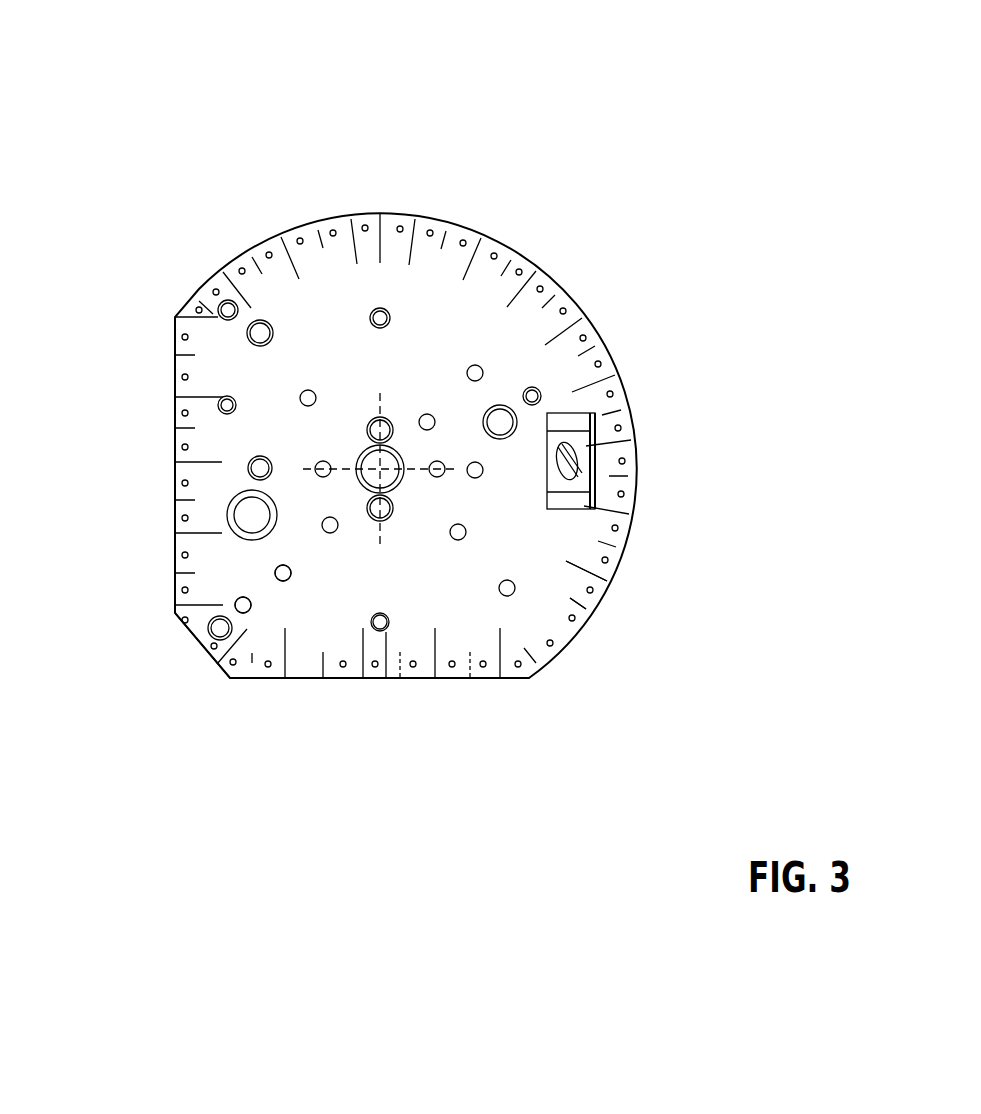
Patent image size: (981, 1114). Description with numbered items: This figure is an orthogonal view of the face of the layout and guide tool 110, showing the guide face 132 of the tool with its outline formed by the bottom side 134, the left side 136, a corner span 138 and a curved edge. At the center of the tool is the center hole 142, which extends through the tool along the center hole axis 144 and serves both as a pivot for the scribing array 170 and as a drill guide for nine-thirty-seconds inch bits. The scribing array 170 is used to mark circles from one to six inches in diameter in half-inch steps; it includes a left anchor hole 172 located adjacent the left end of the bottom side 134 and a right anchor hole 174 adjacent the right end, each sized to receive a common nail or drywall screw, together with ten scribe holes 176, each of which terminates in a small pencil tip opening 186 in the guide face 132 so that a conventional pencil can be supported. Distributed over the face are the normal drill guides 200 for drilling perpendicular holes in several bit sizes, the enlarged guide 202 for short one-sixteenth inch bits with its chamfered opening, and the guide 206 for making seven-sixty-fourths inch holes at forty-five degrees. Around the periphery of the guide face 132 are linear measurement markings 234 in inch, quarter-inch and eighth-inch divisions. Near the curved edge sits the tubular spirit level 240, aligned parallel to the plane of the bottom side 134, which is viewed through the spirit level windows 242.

The layout and guide tool 110 is at (189, 98).
The guide face 132 is at (540, 580).
The bottom side 134 is at (156, 414).
The left side 136 is at (388, 682).
The corner span 138 is at (151, 661).
The center hole 142 is at (395, 480).
The center hole axis 144 is at (390, 472).
The scribing array 170 is at (280, 597).
The left anchor hole 172 is at (210, 622).
The right anchor hole 174 is at (217, 307).
The scribe holes 176 is at (288, 590).
The pencil tip opening 186 is at (288, 576).
The normal drill guides 200 is at (227, 514).
The 1/16 enlarged guide 202 is at (218, 402).
The 7/64 45 degree guide 206 is at (537, 388).
The linear measurement markings 234 is at (437, 647).
The tubular spirit level 240 is at (557, 437).
The tubular spirit level windows 242 is at (580, 473).